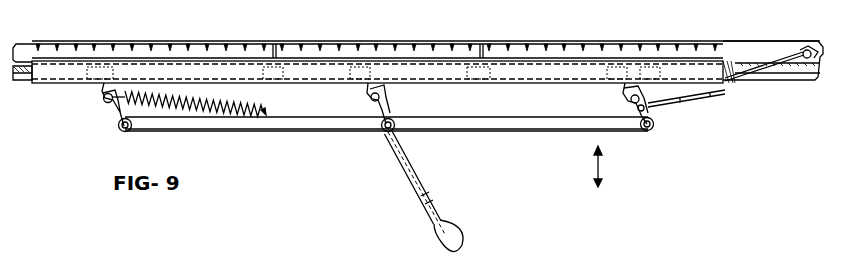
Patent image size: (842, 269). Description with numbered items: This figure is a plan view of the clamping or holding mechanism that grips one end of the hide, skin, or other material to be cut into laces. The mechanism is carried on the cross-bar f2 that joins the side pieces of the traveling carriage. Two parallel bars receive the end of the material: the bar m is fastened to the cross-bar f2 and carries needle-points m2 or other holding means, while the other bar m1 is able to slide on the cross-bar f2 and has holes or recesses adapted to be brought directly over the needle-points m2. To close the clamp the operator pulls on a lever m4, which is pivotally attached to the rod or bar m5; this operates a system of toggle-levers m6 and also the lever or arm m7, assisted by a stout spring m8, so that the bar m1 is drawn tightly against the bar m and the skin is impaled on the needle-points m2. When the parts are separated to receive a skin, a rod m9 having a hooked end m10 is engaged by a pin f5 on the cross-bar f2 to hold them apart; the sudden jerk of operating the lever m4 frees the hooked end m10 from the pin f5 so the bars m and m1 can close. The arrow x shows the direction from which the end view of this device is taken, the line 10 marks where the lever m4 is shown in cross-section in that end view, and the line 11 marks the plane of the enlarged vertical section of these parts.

The cross-bar f2 is at (22, 50).
The pin f5 is at (805, 52).
The bar m is at (572, 47).
The bar m1 is at (537, 74).
The needle-points m2 is at (38, 48).
The lever m4 is at (422, 184).
The rod or bar m5 is at (296, 123).
The toggle-levers m6 is at (105, 100).
The lever or arm m7 is at (367, 92).
The spring m8 is at (221, 108).
The rod m9 is at (756, 76).
The hooked end m10 is at (816, 49).
The section line 10 is at (460, 140).
The section line 11 is at (387, 82).
The arrow x is at (607, 165).